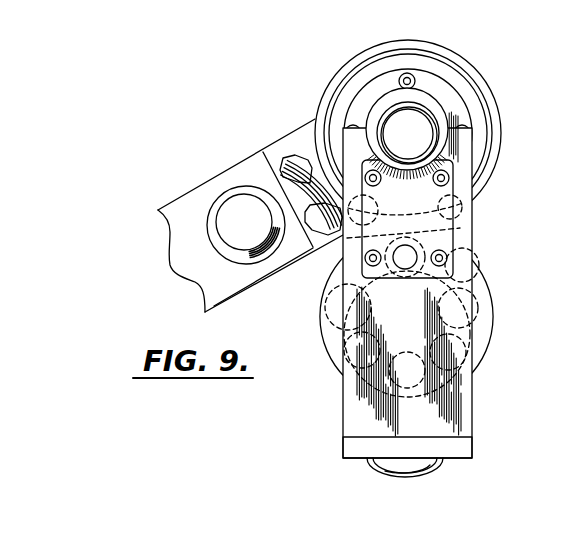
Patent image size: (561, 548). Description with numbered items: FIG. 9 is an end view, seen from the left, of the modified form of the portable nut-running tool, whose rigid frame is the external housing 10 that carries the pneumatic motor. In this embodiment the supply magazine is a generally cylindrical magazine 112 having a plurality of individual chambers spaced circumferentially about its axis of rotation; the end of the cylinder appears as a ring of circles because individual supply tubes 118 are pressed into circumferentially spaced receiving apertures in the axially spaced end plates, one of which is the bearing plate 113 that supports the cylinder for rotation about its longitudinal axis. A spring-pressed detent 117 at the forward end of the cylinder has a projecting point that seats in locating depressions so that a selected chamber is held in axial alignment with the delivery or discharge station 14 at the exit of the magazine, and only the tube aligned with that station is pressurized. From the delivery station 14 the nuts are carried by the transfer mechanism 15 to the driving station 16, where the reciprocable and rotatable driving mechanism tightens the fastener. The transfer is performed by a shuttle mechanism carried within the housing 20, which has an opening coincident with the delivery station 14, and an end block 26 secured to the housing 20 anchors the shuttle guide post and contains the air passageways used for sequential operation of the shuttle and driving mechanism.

The external housing 10 is at (459, 50).
The delivery or discharge station 14 is at (414, 254).
The transfer mechanism 15 is at (478, 390).
The driving station 16 is at (401, 126).
The housing 20 is at (411, 316).
The end block 26 is at (467, 451).
The cylindrical magazine 112 is at (498, 336).
The bearing plate 113 is at (321, 326).
The spring-pressed detent 117 is at (378, 467).
The supply tube 118 is at (341, 370).